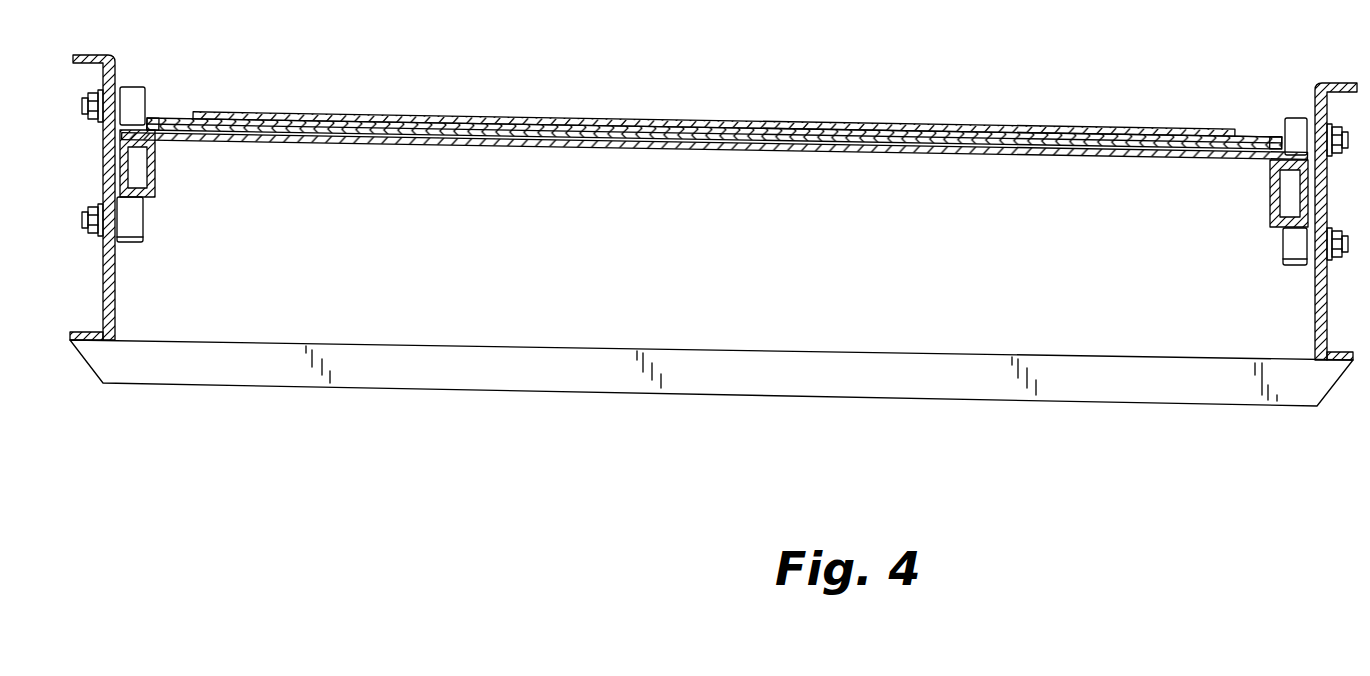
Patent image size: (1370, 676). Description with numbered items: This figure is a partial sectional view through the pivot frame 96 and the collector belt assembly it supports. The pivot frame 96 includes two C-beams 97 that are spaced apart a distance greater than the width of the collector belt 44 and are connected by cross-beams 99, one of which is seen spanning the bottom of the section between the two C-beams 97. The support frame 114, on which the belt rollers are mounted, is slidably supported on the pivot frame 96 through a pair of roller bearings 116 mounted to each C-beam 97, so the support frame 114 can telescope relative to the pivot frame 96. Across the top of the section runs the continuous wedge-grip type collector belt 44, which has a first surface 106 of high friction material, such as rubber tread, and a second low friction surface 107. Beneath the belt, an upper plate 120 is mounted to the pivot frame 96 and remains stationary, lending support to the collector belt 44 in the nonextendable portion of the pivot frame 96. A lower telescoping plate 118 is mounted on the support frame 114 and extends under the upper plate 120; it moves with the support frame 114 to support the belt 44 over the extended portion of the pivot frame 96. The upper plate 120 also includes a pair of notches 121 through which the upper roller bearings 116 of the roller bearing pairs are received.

The collector belt 44 is at (715, 110).
The pivot frame 96 is at (715, 110).
The C-beam 97 is at (103, 284).
The cross-beam 99 is at (512, 377).
The first surface 106 is at (1195, 118).
The second low friction surface 107 is at (1025, 130).
The support frame 114 is at (1270, 227).
The roller bearing 116 is at (132, 102).
The lower telescoping plate 118 is at (1022, 141).
The upper plate 120 is at (943, 118).
The notch 121 is at (150, 118).